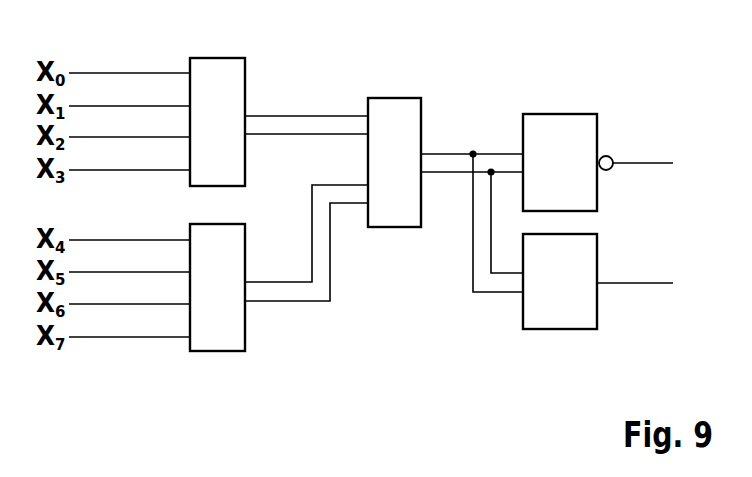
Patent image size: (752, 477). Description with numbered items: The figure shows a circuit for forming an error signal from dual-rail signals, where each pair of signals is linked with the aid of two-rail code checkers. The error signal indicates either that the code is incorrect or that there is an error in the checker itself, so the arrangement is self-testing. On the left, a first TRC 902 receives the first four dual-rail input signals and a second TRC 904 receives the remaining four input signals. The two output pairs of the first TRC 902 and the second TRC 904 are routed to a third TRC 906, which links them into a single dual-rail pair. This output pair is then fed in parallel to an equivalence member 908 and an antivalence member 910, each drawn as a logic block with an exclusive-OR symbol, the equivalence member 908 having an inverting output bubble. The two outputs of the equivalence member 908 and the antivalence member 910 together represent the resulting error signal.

The first TRC 902 is at (216, 68).
The second TRC 904 is at (219, 339).
The third TRC 906 is at (394, 108).
The equivalence member 908 is at (562, 123).
The antivalence member 910 is at (560, 317).